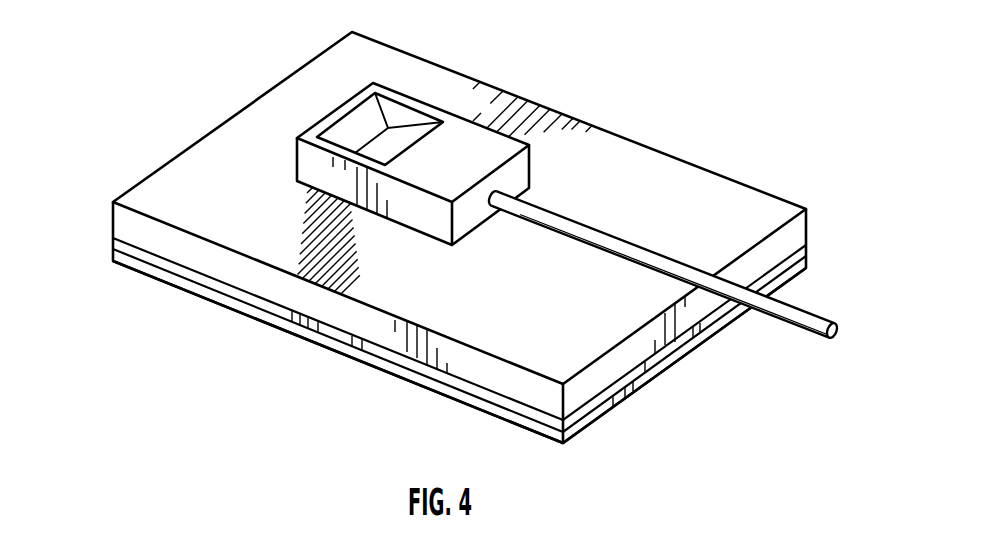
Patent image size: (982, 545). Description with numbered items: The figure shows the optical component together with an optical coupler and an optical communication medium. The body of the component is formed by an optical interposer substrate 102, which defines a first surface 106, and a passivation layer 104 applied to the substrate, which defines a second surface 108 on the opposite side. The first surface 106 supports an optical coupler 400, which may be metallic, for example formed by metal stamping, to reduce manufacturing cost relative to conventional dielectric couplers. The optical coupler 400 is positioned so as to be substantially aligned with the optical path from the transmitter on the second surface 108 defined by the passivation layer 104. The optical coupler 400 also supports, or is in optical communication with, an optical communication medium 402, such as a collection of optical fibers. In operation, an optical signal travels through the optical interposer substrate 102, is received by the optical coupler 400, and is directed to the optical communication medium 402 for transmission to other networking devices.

The optical interposer substrate 102 is at (445, 237).
The passivation layer 104 is at (419, 237).
The first surface 106 is at (106, 252).
The second surface 108 is at (390, 373).
The optical coupler 400 is at (465, 137).
The optical communication medium 402 is at (805, 322).